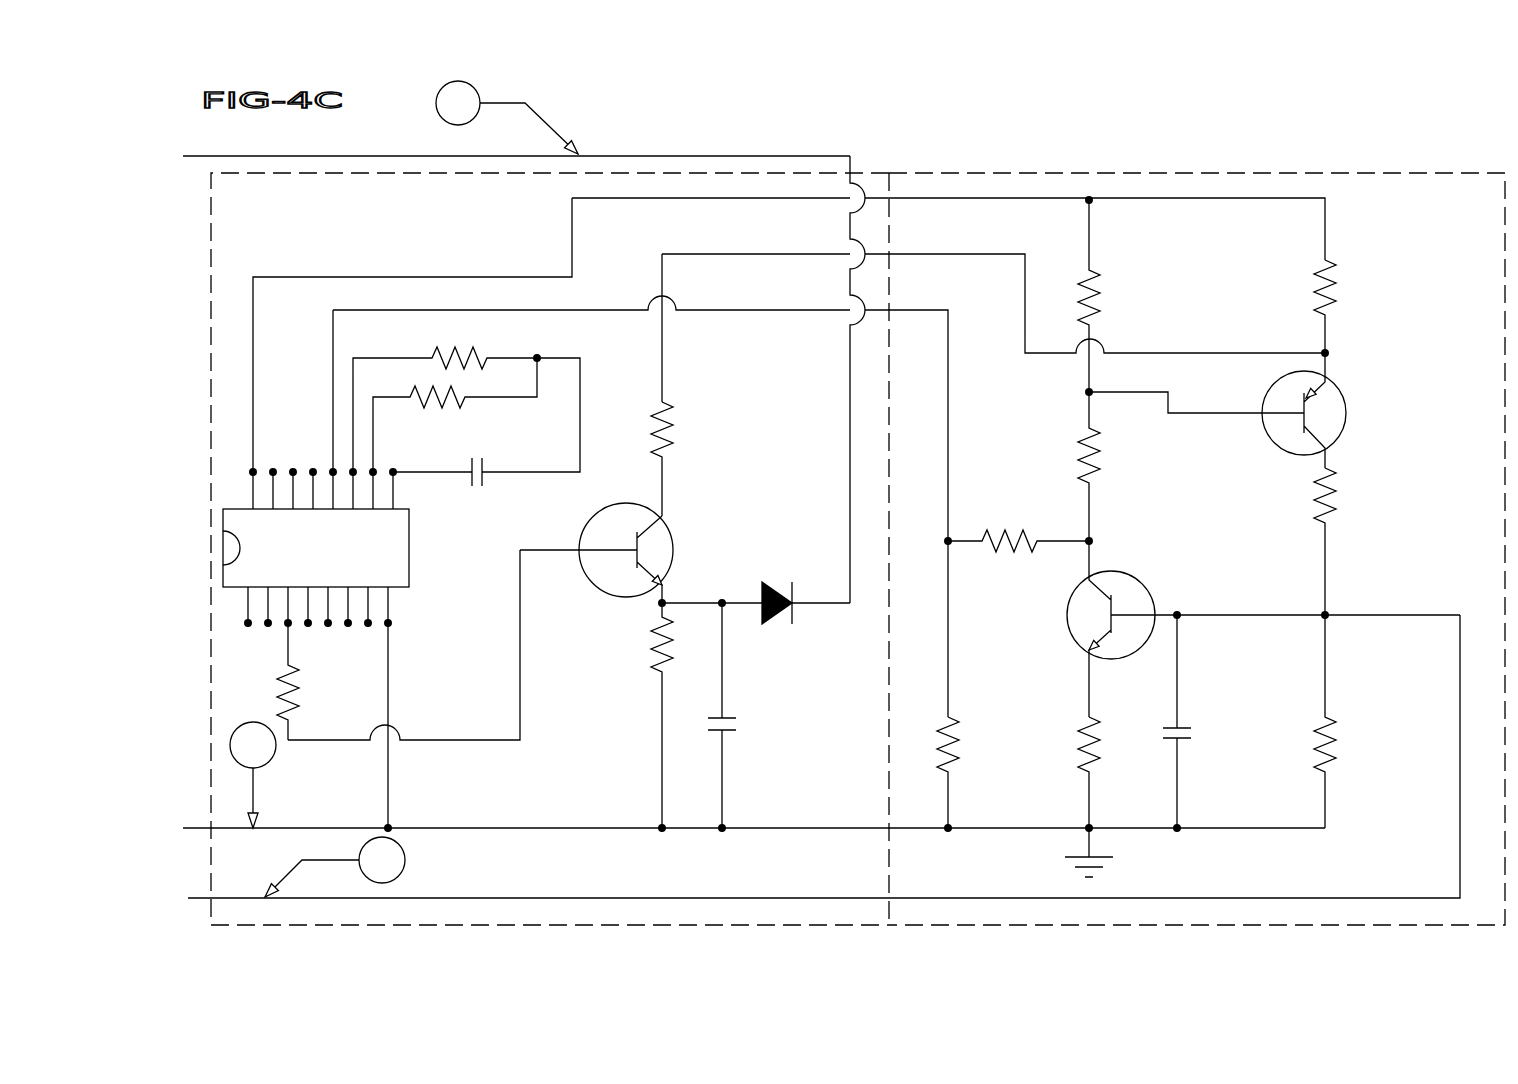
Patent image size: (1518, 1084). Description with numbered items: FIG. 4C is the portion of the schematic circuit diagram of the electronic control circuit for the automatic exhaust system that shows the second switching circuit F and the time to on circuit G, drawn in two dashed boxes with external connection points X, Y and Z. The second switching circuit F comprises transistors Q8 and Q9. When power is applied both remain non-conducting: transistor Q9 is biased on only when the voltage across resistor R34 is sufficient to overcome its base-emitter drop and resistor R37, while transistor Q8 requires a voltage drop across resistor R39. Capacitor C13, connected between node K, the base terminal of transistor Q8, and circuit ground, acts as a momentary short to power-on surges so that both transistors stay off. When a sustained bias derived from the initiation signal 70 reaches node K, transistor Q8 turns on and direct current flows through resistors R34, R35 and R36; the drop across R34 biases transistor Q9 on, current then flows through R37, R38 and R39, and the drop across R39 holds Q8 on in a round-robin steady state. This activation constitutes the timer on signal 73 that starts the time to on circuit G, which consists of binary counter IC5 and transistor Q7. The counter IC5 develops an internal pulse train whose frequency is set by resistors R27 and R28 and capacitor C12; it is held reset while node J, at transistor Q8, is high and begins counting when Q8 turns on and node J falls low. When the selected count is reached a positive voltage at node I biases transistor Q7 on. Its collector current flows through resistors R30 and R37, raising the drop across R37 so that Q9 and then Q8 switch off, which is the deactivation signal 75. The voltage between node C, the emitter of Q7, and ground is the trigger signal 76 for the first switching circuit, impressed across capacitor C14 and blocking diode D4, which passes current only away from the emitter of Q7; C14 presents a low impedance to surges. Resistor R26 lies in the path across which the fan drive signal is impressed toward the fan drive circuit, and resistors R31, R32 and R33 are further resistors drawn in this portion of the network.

The initiation signal 70 is at (640, 898).
The timer on signal 73 is at (1176, 389).
The deactivation signal 75 is at (922, 255).
The trigger signal 76 is at (677, 154).
The time to on circuit G is at (783, 170).
The second switching circuit F is at (1147, 172).
The node C is at (670, 597).
The node I is at (295, 635).
The node J is at (1082, 548).
The node K is at (1333, 600).
The connection X is at (507, 117).
The connection Y is at (253, 775).
The connection Z is at (335, 867).
The binary counter IC5 is at (341, 548).
The resistor R26 is at (262, 681).
The resistor R27 is at (466, 397).
The resistor R28 is at (455, 415).
The resistor R30 is at (634, 459).
The resistor R31 is at (634, 715).
The resistor R32 is at (974, 772).
The resistor R33 is at (1018, 526).
The bias resistor R34 is at (1116, 296).
The resistor R35 is at (1060, 466).
The resistor R36 is at (1059, 772).
The resistor R37 is at (1294, 306).
The resistor R38 is at (1293, 541).
The resistor R39 is at (1293, 721).
The capacitor C12 is at (444, 489).
The capacitor C13 is at (1158, 721).
The capacitor C14 is at (743, 715).
The blocking diode D4 is at (806, 623).
The transistor Q7 is at (619, 553).
The transistor Q8 is at (1123, 629).
The transistor Q9 is at (1295, 413).